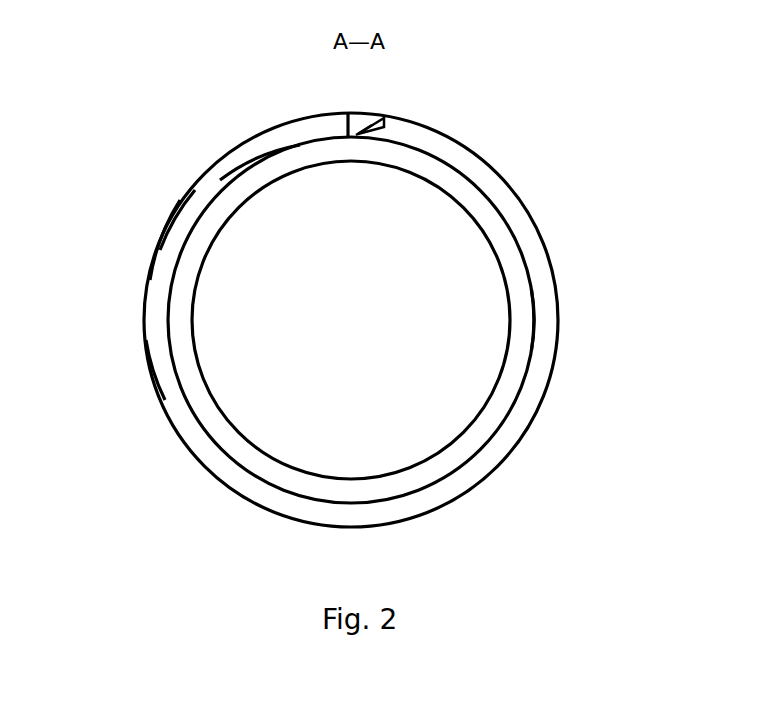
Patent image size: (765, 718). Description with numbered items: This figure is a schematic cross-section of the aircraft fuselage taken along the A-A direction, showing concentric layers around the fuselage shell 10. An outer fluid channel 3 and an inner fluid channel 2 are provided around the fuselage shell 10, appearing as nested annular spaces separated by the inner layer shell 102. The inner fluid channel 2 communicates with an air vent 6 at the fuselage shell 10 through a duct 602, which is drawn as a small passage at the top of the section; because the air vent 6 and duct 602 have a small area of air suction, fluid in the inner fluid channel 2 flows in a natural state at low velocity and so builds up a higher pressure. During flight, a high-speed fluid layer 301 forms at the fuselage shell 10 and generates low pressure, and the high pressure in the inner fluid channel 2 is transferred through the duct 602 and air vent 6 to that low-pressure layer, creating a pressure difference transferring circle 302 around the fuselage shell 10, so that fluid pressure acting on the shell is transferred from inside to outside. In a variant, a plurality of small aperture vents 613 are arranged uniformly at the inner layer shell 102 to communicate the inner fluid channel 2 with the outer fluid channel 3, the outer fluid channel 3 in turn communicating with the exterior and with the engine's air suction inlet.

The fuselage shell 10 is at (147, 302).
The outer fluid channel 3 is at (222, 178).
The inner fluid channel 2 is at (270, 167).
The high-speed fluid layer 301 is at (175, 215).
The pressure difference transferring circle 302 is at (152, 370).
The inner layer shell 102 is at (533, 318).
The air vent 6 is at (348, 113).
The duct 602 is at (360, 132).
The small aperture vent 613 is at (362, 134).